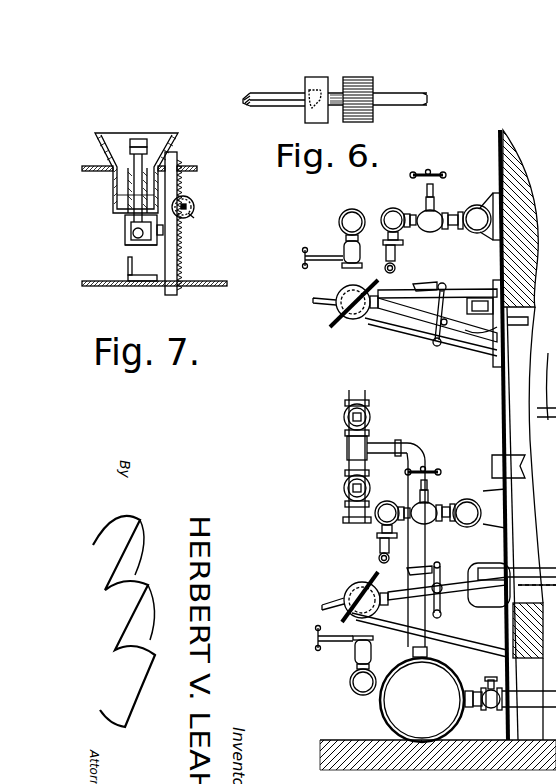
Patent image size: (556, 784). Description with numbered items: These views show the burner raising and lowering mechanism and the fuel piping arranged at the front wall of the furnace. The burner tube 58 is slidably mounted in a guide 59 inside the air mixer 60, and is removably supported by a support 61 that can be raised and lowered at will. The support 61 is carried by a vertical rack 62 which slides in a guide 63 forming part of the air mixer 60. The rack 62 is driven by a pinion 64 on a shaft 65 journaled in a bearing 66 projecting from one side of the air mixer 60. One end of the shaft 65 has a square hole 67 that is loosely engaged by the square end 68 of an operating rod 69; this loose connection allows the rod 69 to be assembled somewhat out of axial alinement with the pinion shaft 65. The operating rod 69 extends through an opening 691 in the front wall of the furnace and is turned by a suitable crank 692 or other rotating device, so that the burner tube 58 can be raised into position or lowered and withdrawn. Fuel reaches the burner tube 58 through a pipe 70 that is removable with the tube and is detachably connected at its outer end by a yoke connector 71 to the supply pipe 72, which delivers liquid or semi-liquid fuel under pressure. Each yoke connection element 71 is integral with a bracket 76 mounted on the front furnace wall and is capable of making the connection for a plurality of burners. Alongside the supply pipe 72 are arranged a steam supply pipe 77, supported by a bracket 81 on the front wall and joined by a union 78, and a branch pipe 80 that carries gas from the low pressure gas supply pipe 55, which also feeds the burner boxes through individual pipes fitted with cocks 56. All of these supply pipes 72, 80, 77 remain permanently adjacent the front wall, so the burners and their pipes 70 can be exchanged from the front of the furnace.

In FIG. 6, the low pressure gas supply pipe 55 is at (380, 711).
In FIG. 6, the cock 56 is at (489, 680).
In FIG. 7, the burner tube 58 is at (140, 138).
In FIG. 7, the guide 59 is at (148, 168).
In FIG. 7, the air mixer 60 is at (101, 148).
In FIG. 7, the support 61 is at (127, 218).
In FIG. 7, the vertical rack 62 is at (170, 252).
In FIG. 7, the guide 63 is at (117, 197).
In FIG. 7, the pinion 64 is at (188, 203).
In FIG. 6, the pinion 64 is at (359, 80).
In FIG. 6, the shaft 65 is at (408, 95).
In FIG. 7, the bearing 66 is at (192, 214).
In FIG. 6, the square hole 67 is at (310, 95).
In FIG. 6, the square end 68 is at (311, 99).
In FIG. 6, the operating rod 69 is at (251, 99).
In FIG. 7, the fuel supply pipe 70 is at (128, 245).
In FIG. 6, the fuel supply pipe 70 is at (413, 308).
In FIG. 6, the yoke connector 71 is at (333, 308).
In FIG. 6, the supply pipe 72 is at (339, 222).
In FIG. 6, the bracket 76 is at (388, 327).
In FIG. 6, the steam supply pipe 77 is at (470, 207).
In FIG. 6, the union 78 is at (386, 248).
In FIG. 6, the branch pipe 80 is at (352, 433).
In FIG. 6, the bracket 81 is at (493, 200).
In FIG. 6, the opening 691 is at (512, 383).
In FIG. 6, the crank 692 is at (442, 283).